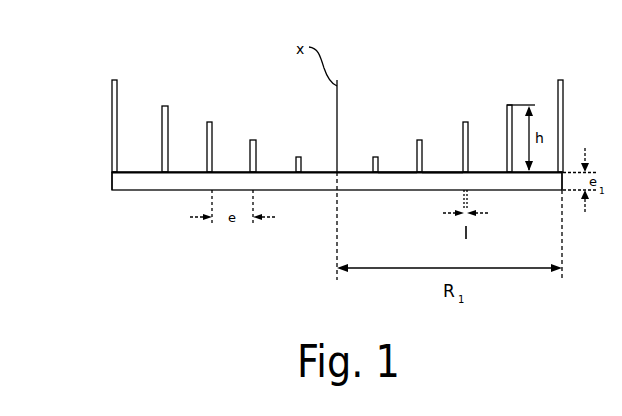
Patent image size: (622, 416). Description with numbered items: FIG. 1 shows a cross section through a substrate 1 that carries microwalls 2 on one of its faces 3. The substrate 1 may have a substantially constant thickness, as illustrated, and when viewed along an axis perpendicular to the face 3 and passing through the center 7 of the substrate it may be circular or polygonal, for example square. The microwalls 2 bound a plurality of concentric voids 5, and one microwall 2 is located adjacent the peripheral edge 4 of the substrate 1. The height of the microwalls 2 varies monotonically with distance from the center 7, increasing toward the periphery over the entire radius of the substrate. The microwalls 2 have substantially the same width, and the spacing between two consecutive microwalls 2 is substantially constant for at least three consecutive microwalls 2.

The substrate 1 is at (112, 190).
The microwalls 2 is at (112, 98).
The face 3 is at (154, 172).
The peripheral edge 4 is at (112, 175).
The concentric voids 5 is at (450, 163).
The center 7 is at (336, 172).